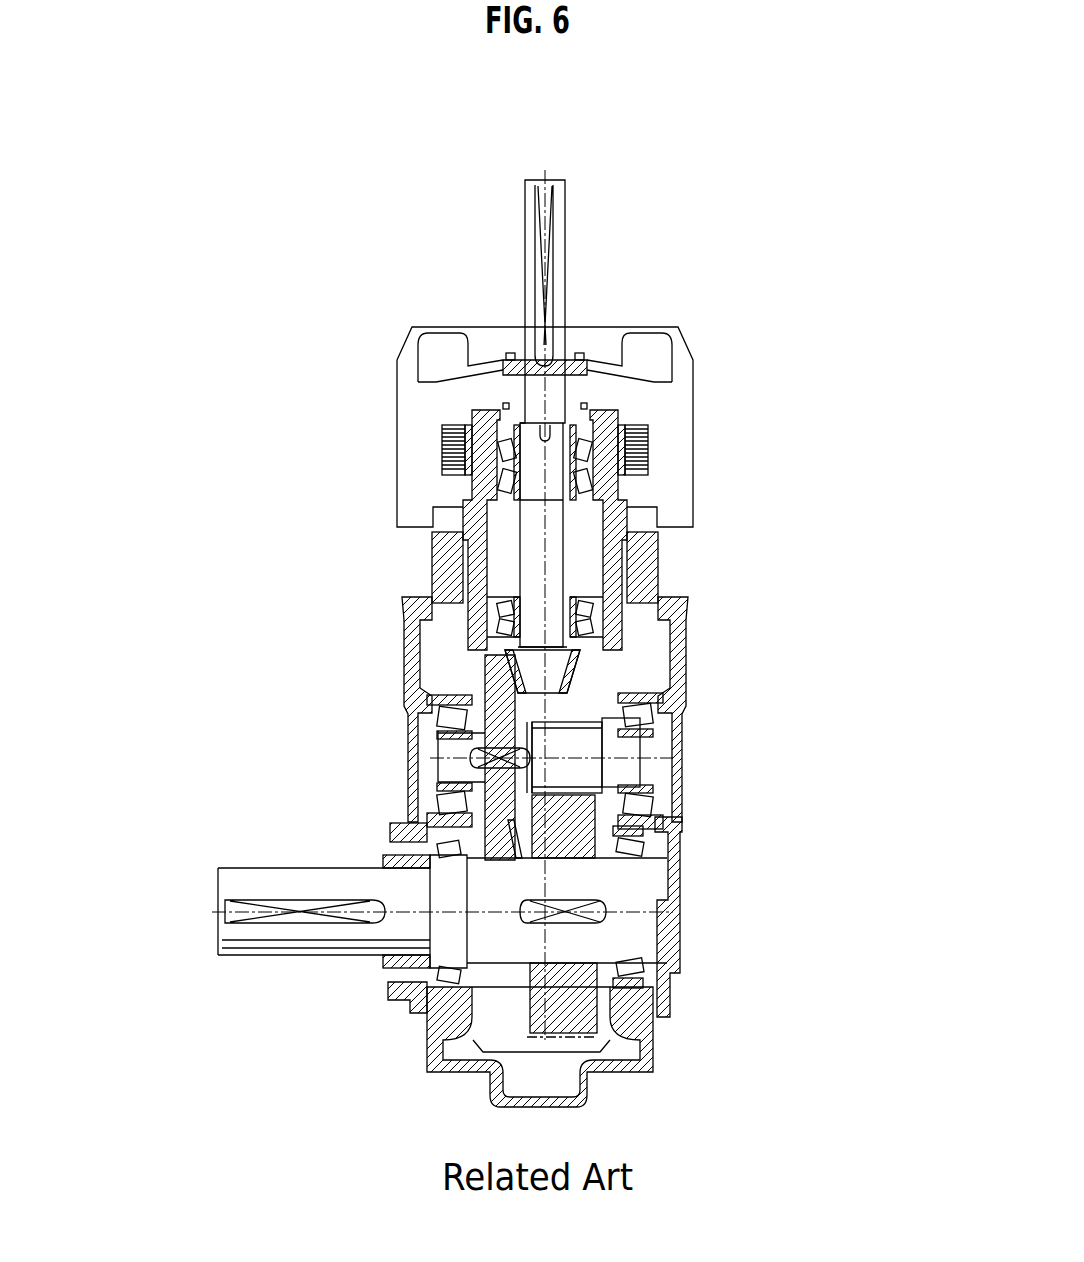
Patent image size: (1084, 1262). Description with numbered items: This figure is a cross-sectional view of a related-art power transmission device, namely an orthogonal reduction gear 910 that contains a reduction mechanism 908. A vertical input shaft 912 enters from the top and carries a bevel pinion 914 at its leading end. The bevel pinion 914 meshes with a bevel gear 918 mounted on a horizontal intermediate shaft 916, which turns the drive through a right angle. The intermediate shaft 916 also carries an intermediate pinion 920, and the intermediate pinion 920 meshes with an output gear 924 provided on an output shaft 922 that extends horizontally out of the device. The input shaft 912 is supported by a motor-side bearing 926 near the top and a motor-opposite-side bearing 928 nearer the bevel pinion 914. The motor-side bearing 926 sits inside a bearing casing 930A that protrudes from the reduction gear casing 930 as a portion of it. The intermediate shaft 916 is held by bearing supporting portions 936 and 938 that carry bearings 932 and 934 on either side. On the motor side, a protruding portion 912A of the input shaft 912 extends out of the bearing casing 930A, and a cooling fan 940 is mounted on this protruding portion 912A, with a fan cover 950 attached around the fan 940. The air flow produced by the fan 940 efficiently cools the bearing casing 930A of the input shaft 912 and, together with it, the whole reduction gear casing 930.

The reduction gear 910 is at (668, 205).
The input shaft 912 is at (557, 247).
The protruding portion 912A is at (528, 317).
The fan 940 is at (660, 353).
The fan cover 950 is at (690, 395).
The bearing casing 930A is at (482, 438).
The motor-side bearing 926 is at (452, 455).
The reduction gear casing 930 is at (398, 600).
The bevel gear 918 is at (490, 675).
The bearing 934 is at (445, 720).
The bearing supporting portion 938 is at (405, 772).
The motor-opposite-side bearing 928 is at (587, 627).
The reduction mechanism 908 is at (647, 657).
The bevel pinion 914 is at (580, 672).
The bearing 932 is at (640, 723).
The intermediate shaft 916 is at (632, 747).
The intermediate pinion 920 is at (583, 772).
The bearing supporting portion 936 is at (678, 793).
The output gear 924 is at (575, 817).
The output shaft 922 is at (628, 887).